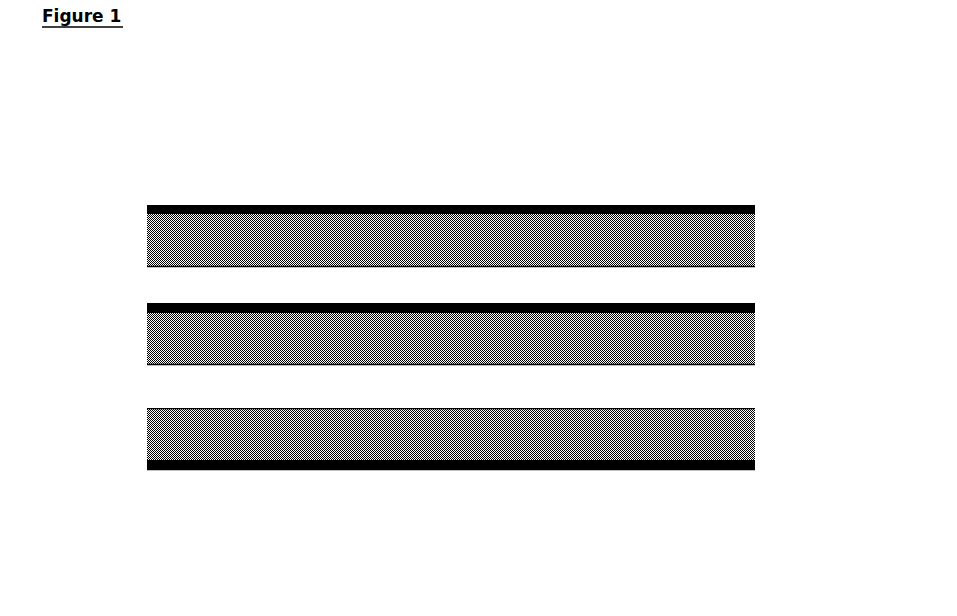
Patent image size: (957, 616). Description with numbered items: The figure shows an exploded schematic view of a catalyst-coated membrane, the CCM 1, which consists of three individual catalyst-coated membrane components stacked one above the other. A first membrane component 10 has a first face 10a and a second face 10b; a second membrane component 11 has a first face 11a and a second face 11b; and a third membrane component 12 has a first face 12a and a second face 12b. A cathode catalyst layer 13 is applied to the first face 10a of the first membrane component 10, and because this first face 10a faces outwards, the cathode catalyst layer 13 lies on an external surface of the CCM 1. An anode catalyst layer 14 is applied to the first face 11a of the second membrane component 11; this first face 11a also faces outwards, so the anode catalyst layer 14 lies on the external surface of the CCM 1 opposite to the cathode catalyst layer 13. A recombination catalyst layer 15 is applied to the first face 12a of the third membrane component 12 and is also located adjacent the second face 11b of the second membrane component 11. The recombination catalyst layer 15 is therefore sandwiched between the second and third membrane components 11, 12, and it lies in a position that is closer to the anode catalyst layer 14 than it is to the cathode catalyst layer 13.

The CCM 1 is at (531, 111).
The first membrane component 10 is at (718, 428).
The first face of the first membrane component 10a is at (763, 467).
The second face of the first membrane component 10b is at (763, 410).
The second membrane component 11 is at (718, 240).
The first face of the second membrane component 11a is at (763, 208).
The second face of the second membrane component 11b is at (763, 265).
The third membrane component 12 is at (180, 348).
The first face of the third membrane component 12a is at (139, 306).
The second face of the third membrane component 12b is at (139, 363).
The cathode catalyst layer 13 is at (665, 478).
The anode catalyst layer 14 is at (328, 198).
The recombination catalyst layer 15 is at (209, 303).